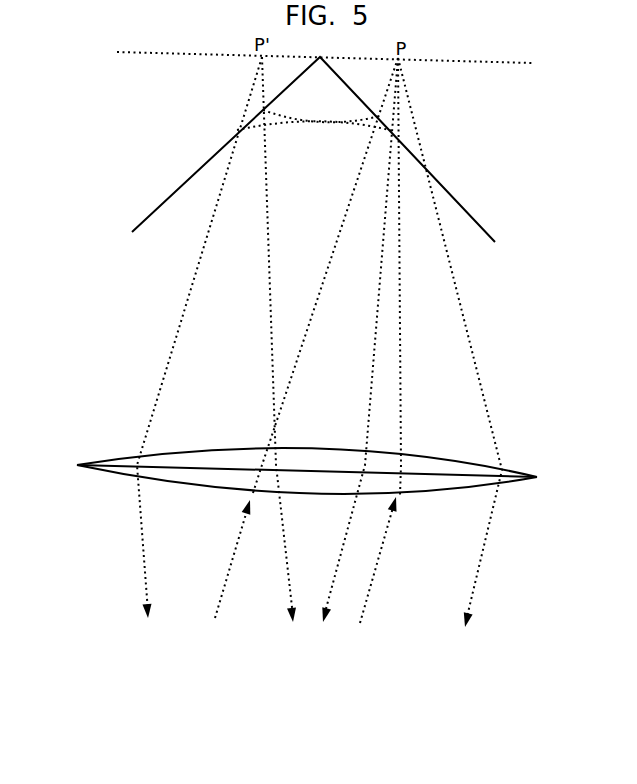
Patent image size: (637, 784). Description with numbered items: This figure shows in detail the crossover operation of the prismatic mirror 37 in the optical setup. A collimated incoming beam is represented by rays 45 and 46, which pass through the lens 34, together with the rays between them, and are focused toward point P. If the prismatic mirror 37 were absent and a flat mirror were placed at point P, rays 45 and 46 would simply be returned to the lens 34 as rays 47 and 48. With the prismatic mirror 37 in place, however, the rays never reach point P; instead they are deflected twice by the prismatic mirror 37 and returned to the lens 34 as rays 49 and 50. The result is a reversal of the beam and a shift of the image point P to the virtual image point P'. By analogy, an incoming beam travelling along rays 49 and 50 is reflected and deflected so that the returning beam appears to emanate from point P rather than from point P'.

The lens 34 is at (490, 478).
The prismatic mirror 37 is at (468, 212).
The ray 45 is at (227, 583).
The ray 46 is at (368, 595).
The ray 47 is at (332, 595).
The ray 48 is at (473, 597).
The ray 49 is at (142, 553).
The ray 50 is at (286, 558).